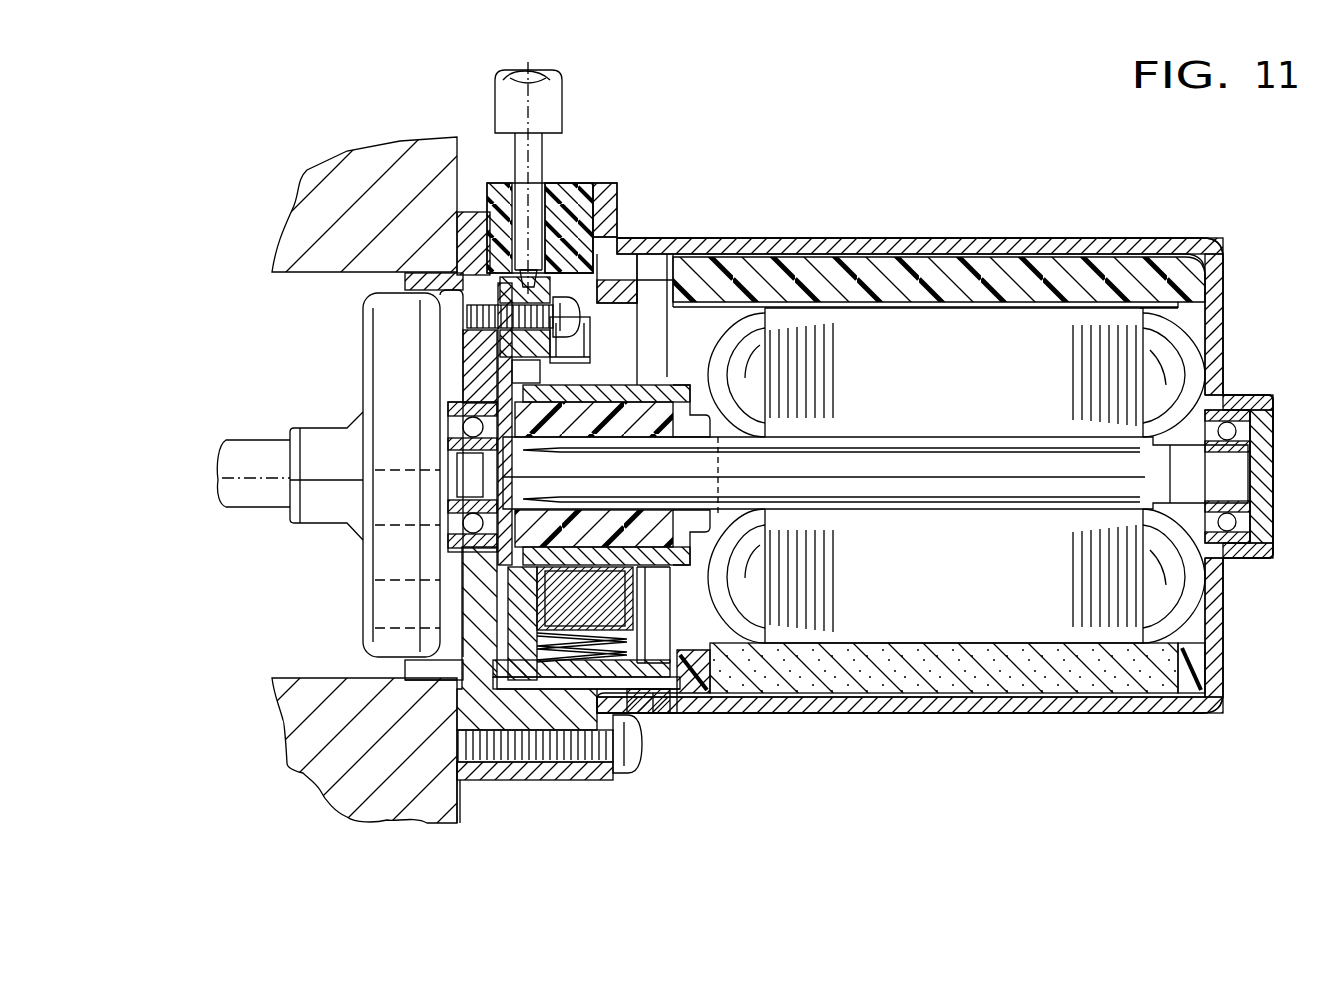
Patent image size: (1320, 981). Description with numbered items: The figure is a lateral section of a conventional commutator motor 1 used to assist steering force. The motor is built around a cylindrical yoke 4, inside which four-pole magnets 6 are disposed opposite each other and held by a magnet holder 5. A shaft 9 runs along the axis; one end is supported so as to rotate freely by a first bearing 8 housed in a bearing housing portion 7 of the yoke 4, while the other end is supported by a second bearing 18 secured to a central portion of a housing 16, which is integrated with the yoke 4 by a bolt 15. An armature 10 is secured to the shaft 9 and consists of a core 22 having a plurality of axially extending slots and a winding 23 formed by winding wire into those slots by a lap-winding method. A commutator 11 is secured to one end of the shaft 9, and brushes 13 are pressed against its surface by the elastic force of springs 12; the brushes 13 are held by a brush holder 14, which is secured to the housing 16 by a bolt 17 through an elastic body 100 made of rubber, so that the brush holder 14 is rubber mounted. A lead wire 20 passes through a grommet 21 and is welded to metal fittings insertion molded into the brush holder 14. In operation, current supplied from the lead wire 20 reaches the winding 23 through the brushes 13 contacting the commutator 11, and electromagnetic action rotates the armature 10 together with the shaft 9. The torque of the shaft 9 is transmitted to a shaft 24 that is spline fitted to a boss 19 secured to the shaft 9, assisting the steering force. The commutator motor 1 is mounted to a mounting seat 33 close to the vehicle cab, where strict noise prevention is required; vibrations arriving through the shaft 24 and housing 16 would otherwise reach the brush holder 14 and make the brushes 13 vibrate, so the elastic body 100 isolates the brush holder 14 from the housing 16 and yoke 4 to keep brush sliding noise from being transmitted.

The commutator motor 1 is at (1240, 175).
The yoke 4 is at (1228, 337).
The magnet holder 5 is at (1037, 267).
The magnets 6 is at (993, 673).
The bearing housing portion 7 is at (1257, 407).
The first bearing 8 is at (1240, 543).
The shaft 9 is at (1037, 490).
The armature 10 is at (890, 618).
The commutator 11 is at (590, 377).
The springs 12 is at (627, 677).
The brushes 13 is at (613, 612).
The brush holder 14 is at (628, 680).
The bolt 15 is at (578, 757).
The housing 16 is at (473, 250).
The bolt 17 is at (610, 235).
The second bearing 18 is at (483, 547).
The boss 19 is at (383, 613).
The lead wire 20 is at (540, 167).
The grommet 21 is at (567, 197).
The core 22 is at (935, 330).
The winding 23 is at (750, 323).
The shaft 24 is at (263, 503).
The mounting seat 33 is at (368, 780).
The elastic body 100 is at (443, 258).